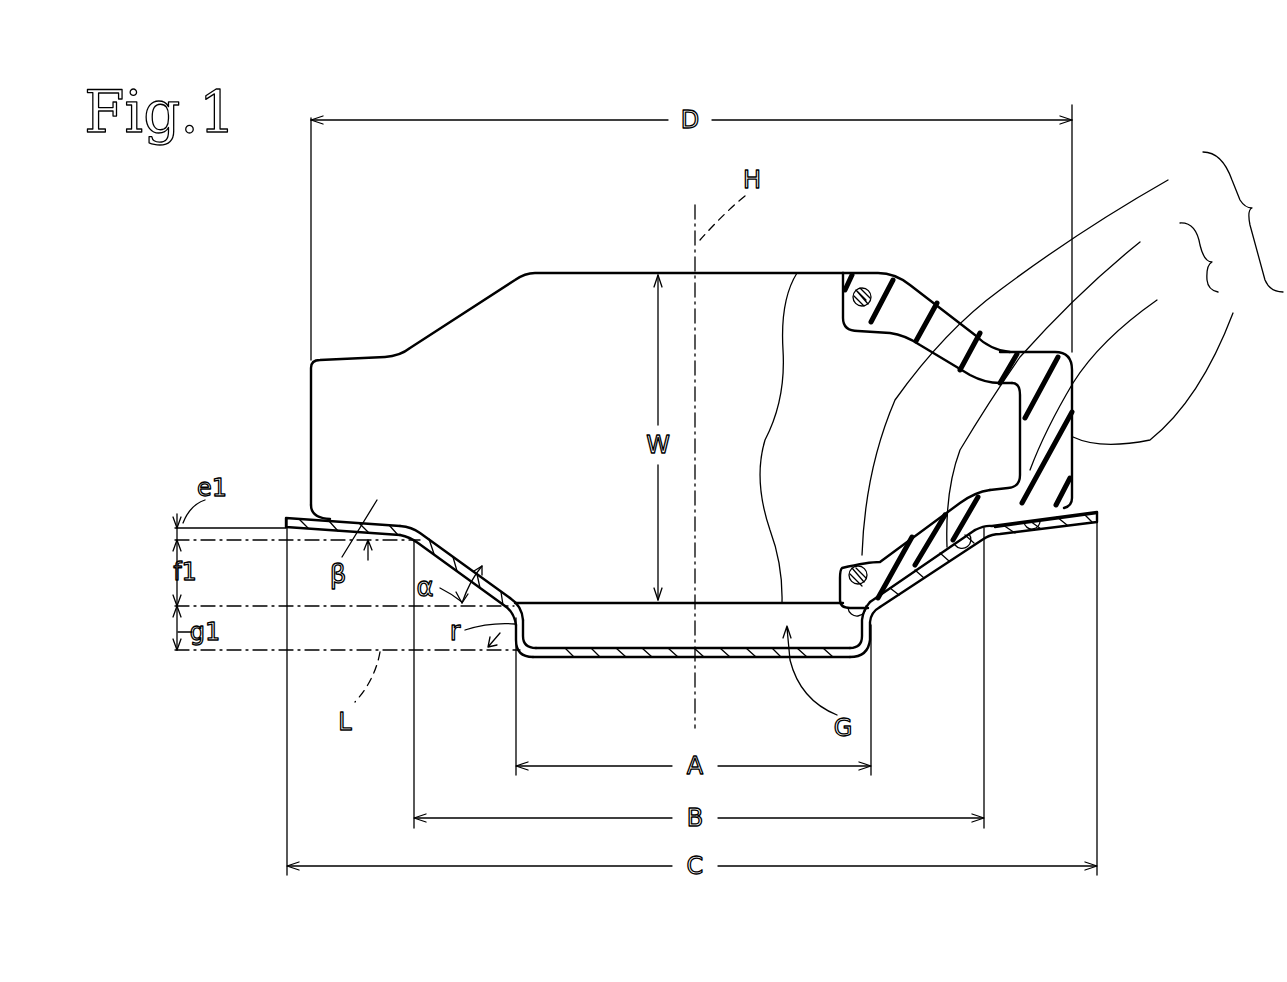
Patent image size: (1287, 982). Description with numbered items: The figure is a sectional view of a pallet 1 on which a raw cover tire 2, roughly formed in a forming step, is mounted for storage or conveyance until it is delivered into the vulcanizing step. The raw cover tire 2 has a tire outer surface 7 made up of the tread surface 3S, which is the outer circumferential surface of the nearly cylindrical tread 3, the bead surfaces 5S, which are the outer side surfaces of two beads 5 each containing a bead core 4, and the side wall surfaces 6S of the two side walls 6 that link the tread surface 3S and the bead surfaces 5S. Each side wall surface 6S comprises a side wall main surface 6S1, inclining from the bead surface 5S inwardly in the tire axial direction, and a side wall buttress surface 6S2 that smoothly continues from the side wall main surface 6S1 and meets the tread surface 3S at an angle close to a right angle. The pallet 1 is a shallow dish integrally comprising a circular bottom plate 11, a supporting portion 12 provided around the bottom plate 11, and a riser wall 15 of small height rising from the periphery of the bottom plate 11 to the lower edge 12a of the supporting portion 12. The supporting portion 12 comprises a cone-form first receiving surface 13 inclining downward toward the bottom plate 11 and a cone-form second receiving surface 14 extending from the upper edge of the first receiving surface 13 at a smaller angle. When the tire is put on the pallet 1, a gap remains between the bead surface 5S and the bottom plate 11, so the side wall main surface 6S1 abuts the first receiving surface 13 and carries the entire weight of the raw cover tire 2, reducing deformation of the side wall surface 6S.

The pallet 1 is at (691, 593).
The raw cover tire 2 is at (454, 272).
The tread 3 is at (977, 404).
The bead core 4 is at (838, 570).
The bead 5 is at (846, 511).
The side wall 6 is at (912, 302).
The tire outer surface 7 is at (1243, 222).
The bottom plate 11 is at (758, 658).
The supporting portion 12 is at (1078, 626).
The lower edge of the supporting portion 12a is at (515, 605).
The first receiving surface 13 is at (440, 556).
The second receiving surface 14 is at (350, 522).
The riser wall 15 is at (527, 612).
The tread surface 3S is at (1166, 361).
The bead surface 5S is at (1021, 355).
The side wall surface 6S is at (1211, 257).
The side wall main surface 6S1 is at (1065, 380).
The side wall buttress surface 6S2 is at (1114, 368).